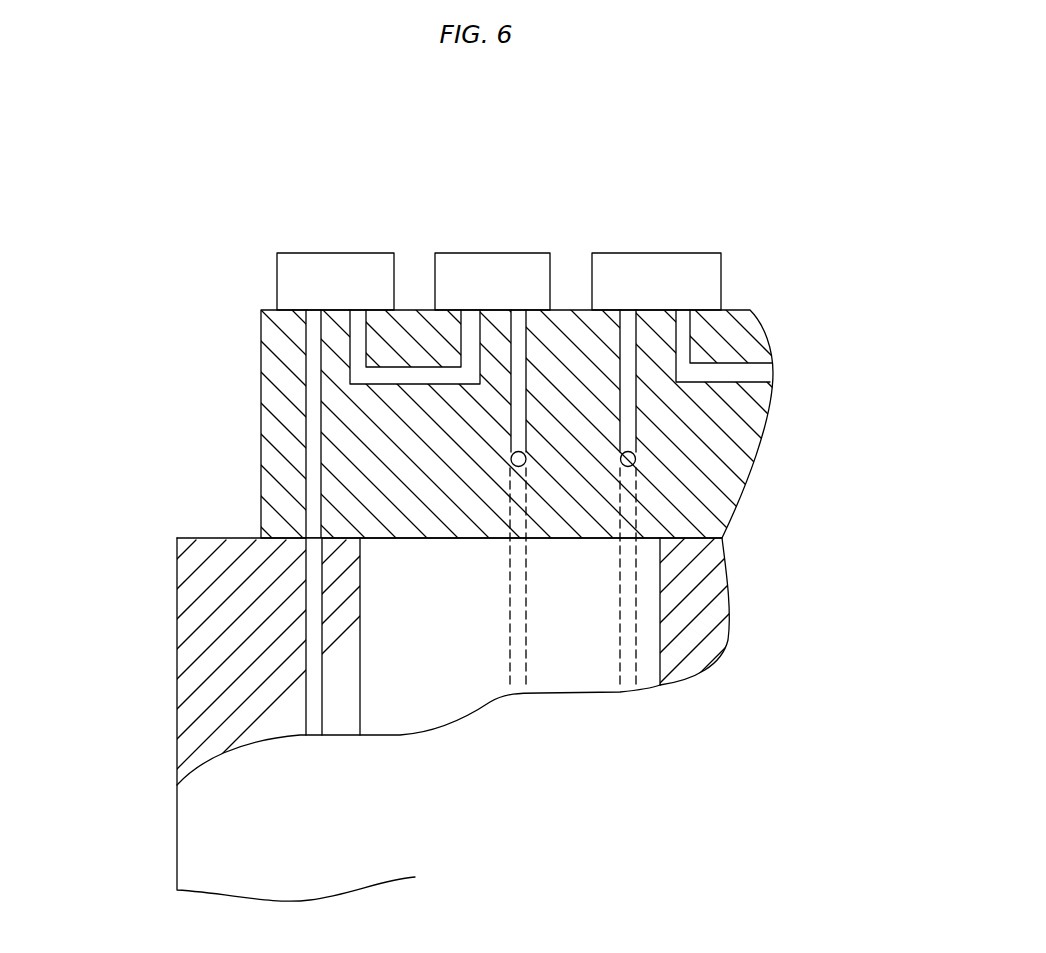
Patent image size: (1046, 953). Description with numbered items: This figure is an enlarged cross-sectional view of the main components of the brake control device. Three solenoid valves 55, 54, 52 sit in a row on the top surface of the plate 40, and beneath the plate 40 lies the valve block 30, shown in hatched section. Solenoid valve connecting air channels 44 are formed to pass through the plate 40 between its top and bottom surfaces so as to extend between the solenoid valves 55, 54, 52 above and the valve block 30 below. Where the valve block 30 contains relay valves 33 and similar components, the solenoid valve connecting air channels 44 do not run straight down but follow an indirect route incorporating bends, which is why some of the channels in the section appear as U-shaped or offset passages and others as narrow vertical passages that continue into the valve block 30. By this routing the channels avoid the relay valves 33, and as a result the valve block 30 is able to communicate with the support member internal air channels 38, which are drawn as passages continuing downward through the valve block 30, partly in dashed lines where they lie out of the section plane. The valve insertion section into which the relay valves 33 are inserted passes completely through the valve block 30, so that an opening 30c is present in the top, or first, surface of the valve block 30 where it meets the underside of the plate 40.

The valve block 30 is at (158, 808).
The opening 30c is at (403, 537).
The relay valve 33 is at (416, 720).
The support member internal air channel 38 is at (313, 722).
The plate 40 is at (232, 326).
The solenoid valve connecting air channel 44 is at (360, 338).
The solenoid valve 52 is at (666, 266).
The solenoid valve 54 is at (502, 266).
The solenoid valve 55 is at (346, 262).